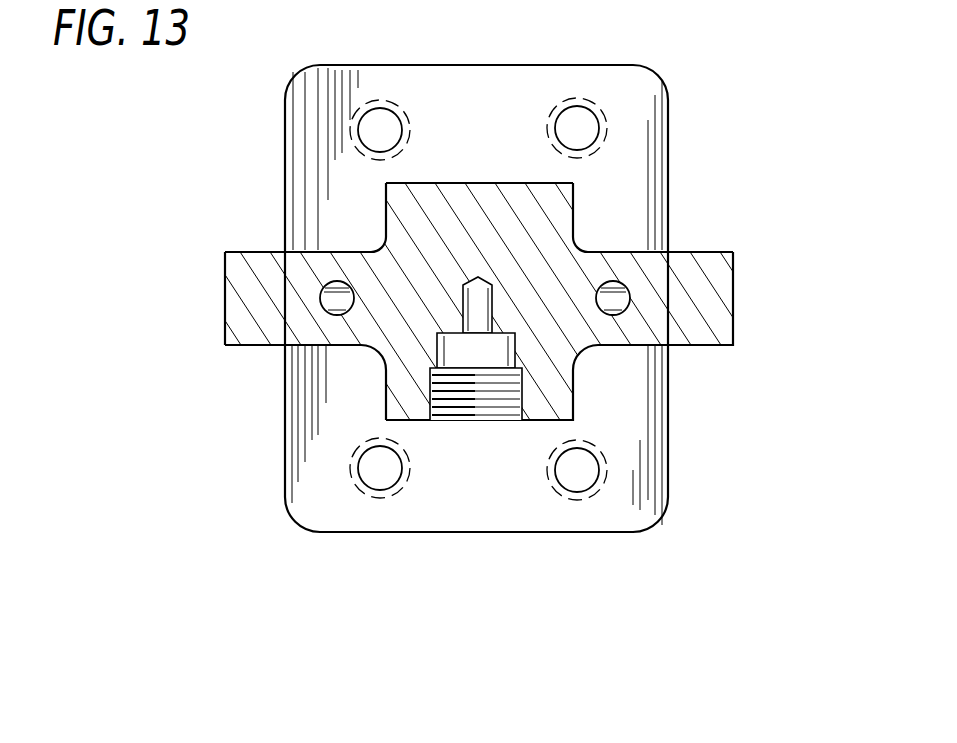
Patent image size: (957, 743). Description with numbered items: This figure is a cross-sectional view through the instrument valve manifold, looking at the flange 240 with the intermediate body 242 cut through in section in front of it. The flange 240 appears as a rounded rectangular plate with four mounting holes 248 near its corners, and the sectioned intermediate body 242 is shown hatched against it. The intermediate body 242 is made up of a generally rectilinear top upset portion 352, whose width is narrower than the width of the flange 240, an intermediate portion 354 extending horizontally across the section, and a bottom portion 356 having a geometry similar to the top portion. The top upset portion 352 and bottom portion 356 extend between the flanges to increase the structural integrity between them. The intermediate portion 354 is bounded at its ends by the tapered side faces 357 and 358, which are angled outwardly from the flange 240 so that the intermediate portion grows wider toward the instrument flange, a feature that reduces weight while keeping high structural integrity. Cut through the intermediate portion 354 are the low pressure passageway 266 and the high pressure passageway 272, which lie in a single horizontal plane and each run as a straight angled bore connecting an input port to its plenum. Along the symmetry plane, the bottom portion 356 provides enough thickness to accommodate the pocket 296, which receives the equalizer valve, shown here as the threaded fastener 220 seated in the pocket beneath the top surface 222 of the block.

The fastener bolt 220 is at (423, 420).
The base block 222 is at (457, 182).
The flange 240 is at (527, 75).
The intermediate body 242 is at (535, 240).
The mounting holes 248 is at (587, 468).
The low pressure passageway 266 is at (327, 293).
The high pressure passageway 272 is at (618, 303).
The pocket 296 is at (437, 337).
The top upset portion 352 is at (558, 200).
The intermediate portion 354 is at (700, 270).
The bottom portion 356 is at (405, 393).
The tapered side face 357 is at (733, 306).
The tapered side face 358 is at (225, 298).